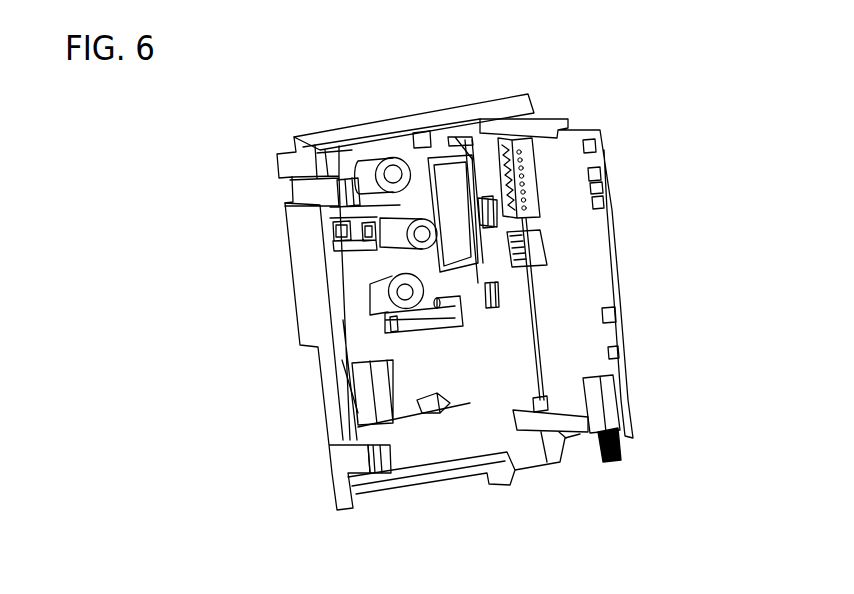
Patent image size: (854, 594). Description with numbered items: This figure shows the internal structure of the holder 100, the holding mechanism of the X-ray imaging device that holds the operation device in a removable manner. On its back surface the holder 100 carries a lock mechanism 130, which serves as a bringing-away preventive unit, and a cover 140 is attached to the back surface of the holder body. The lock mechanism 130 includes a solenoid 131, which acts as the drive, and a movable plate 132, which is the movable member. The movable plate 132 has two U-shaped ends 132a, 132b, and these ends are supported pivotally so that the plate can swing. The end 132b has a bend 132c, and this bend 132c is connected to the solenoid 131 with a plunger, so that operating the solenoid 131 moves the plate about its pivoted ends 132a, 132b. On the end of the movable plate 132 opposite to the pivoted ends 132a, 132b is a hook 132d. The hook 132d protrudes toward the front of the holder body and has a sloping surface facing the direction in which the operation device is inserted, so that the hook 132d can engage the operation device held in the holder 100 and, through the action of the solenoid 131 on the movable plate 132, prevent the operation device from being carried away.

The holder 100 is at (662, 448).
The lock mechanism 130 is at (219, 263).
The solenoid 131 is at (402, 220).
The movable plate 132 is at (467, 406).
The U-shaped end 132a is at (382, 334).
The U-shaped end 132b is at (468, 308).
The bend 132c is at (440, 276).
The hook 132d is at (447, 420).
The cover 140 is at (500, 97).